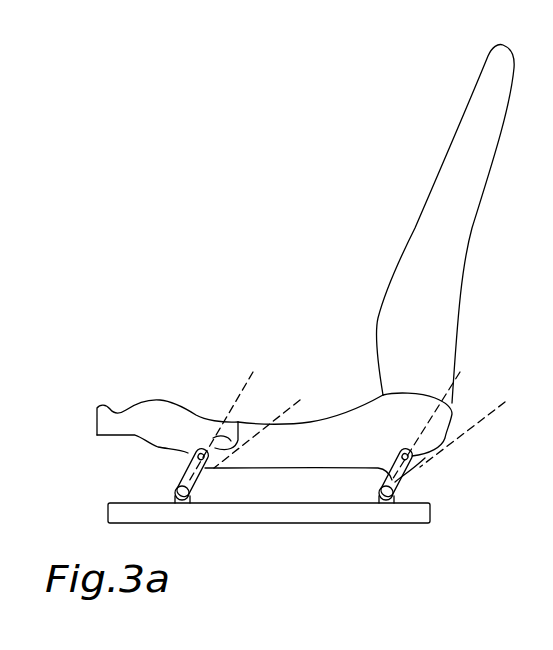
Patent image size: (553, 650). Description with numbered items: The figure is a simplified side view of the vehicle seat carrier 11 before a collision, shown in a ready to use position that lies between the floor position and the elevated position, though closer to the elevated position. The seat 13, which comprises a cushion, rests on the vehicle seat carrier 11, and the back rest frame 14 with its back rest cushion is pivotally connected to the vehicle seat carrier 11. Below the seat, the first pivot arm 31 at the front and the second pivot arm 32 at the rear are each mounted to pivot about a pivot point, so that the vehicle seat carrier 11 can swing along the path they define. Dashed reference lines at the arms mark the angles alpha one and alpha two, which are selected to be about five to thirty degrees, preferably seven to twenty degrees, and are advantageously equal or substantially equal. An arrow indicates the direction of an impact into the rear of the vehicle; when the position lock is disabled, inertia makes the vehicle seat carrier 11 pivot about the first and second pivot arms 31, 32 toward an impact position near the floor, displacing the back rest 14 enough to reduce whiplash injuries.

The vehicle seat carrier 11 is at (318, 364).
The seat 13 is at (200, 420).
The back rest frame 14 is at (452, 229).
The first pivot arm 31 is at (176, 484).
The second pivot arm 32 is at (404, 487).